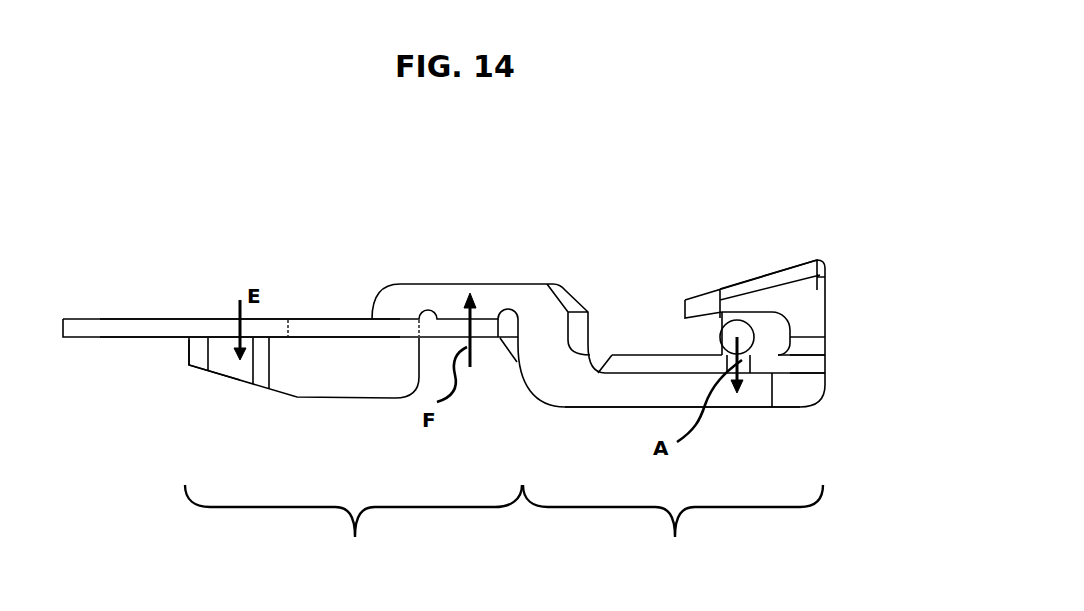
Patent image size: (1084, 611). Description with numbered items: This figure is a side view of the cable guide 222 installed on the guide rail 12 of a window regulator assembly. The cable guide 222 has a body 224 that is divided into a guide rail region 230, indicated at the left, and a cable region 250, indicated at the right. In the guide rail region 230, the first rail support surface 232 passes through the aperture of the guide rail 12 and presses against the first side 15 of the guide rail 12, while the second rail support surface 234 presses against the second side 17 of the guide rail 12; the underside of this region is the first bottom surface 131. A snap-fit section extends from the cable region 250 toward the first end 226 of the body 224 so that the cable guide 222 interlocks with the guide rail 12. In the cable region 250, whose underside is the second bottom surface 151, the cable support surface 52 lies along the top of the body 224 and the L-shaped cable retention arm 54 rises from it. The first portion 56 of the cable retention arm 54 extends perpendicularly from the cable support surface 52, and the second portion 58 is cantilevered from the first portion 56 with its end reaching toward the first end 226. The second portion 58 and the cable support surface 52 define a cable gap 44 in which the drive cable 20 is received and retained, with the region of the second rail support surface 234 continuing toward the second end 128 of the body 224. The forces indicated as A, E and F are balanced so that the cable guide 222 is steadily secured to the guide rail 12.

The guide rail 12 is at (97, 328).
The second side of the guide rail 17 is at (150, 320).
The first side of the guide rail 15 is at (123, 340).
The first rail support surface 232 is at (215, 335).
The first bottom surface 131 is at (297, 397).
The first end 226 is at (188, 355).
The second rail support surface 234 is at (485, 322).
The body 224 is at (542, 292).
The cable guide 222 is at (494, 176).
The second bottom surface 151 is at (638, 408).
The cable support surface 52 is at (673, 350).
The cable gap 44 is at (770, 338).
The drive cable 20 is at (745, 342).
The first portion of the cable retention arm 56 is at (810, 333).
The second end of the body 128 is at (823, 362).
The cable retention arm 54 is at (802, 298).
The second portion of the cable retention arm 58 is at (747, 297).
The guide rail region 230 is at (353, 530).
The cable region 250 is at (673, 530).